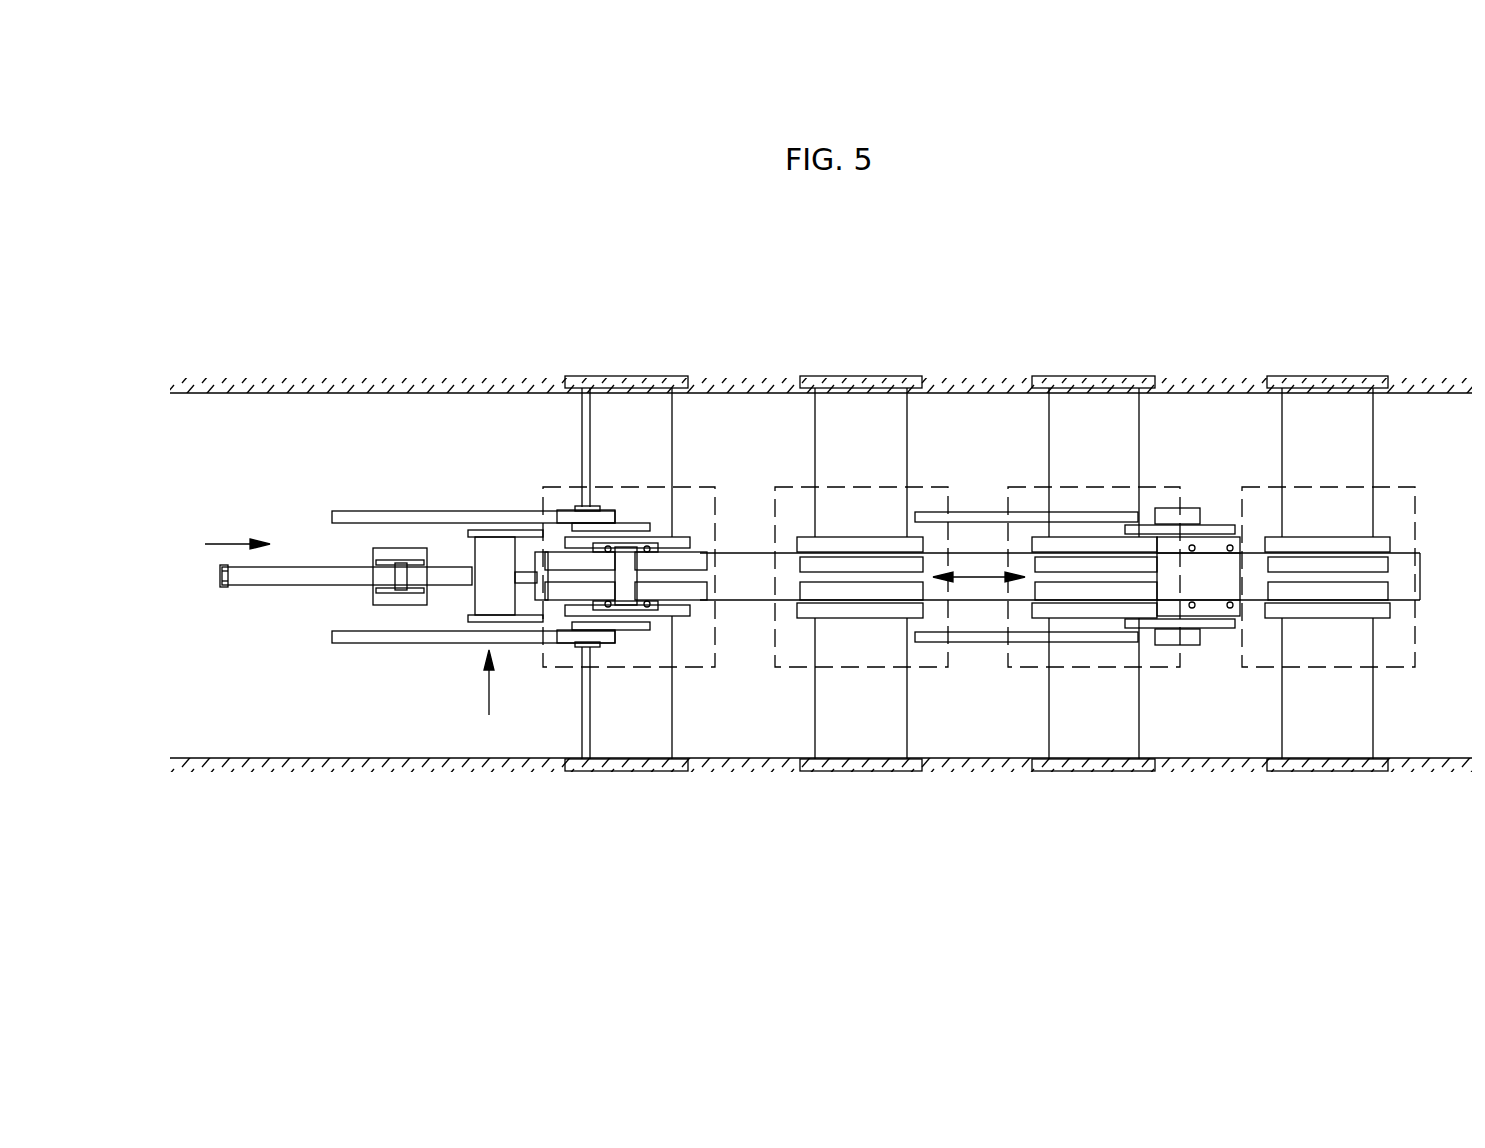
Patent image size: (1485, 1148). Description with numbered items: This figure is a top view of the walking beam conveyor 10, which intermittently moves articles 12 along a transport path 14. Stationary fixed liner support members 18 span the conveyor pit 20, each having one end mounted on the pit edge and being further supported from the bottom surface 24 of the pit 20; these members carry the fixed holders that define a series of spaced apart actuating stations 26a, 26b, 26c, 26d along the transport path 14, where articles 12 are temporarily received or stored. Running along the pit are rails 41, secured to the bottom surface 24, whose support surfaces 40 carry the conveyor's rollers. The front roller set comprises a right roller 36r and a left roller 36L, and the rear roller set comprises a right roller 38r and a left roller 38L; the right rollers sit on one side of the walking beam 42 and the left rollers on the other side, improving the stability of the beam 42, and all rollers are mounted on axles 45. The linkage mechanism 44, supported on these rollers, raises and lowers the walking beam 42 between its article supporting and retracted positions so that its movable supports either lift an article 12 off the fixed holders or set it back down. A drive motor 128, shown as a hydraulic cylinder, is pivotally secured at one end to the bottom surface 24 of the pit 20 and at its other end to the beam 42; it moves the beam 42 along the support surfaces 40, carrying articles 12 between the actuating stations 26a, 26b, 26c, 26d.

The walking beam conveyor 10 is at (220, 545).
The articles 12 is at (703, 480).
The transport path 14 is at (980, 573).
The fixed liner support members 18 is at (653, 693).
The conveyor pit 20 is at (821, 377).
The bottom surface 24 is at (472, 412).
The actuating station 26a is at (548, 668).
The actuating station 26b is at (865, 670).
The actuating station 26c is at (1095, 670).
The actuating station 26d is at (1328, 670).
The left front roller 36L is at (605, 515).
The right front roller 36r is at (605, 637).
The left rear roller 38L is at (1190, 515).
The right rear roller 38r is at (1192, 642).
The support surfaces 40 is at (433, 513).
The rails 41 is at (362, 512).
The walking beam 42 is at (753, 555).
The linkage mechanism 44 is at (489, 697).
The axles 45 is at (588, 507).
The drive motor 128 is at (257, 587).